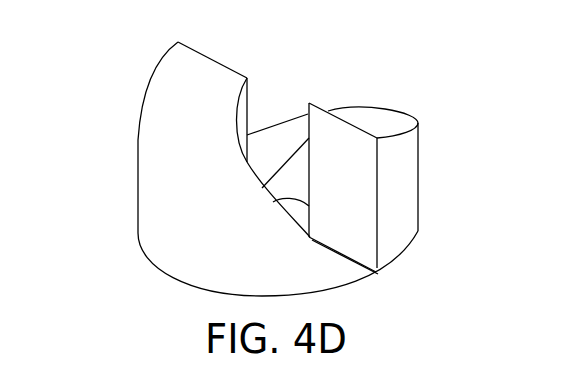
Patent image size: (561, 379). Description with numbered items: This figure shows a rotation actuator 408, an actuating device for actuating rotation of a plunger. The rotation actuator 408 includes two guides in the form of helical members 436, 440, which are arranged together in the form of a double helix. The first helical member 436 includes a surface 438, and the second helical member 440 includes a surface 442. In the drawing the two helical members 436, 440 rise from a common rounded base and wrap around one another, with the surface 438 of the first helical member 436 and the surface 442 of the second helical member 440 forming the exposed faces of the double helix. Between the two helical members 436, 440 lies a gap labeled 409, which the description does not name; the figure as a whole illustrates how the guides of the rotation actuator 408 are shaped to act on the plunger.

The rotation actuator 408 is at (253, 164).
The channel 409 is at (288, 187).
The helical member 436 is at (165, 233).
The surface 438 is at (162, 117).
The helical member 440 is at (403, 222).
The surface 442 is at (387, 123).